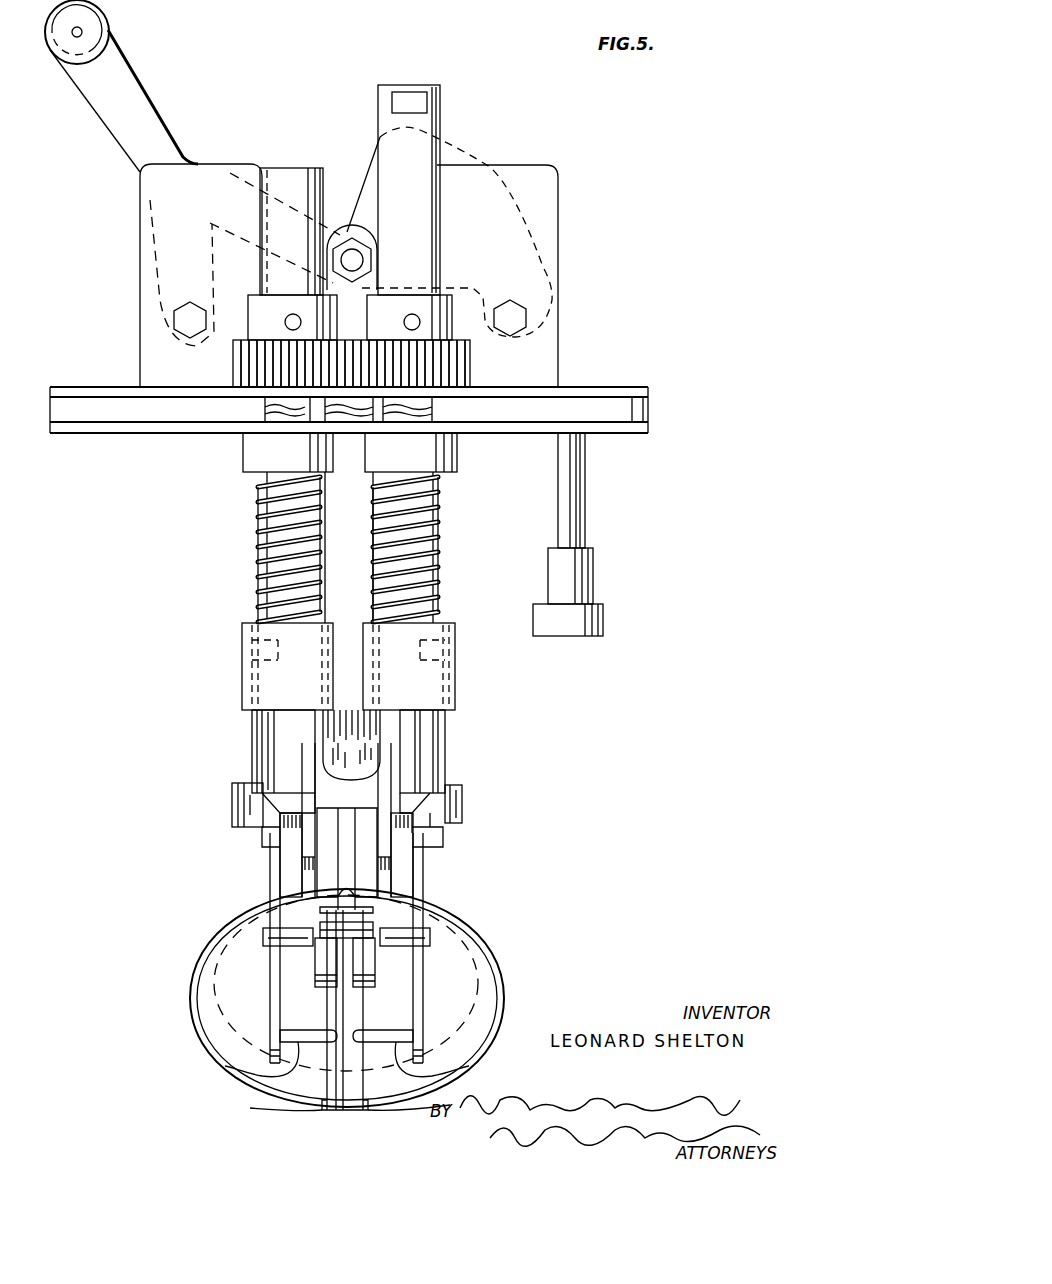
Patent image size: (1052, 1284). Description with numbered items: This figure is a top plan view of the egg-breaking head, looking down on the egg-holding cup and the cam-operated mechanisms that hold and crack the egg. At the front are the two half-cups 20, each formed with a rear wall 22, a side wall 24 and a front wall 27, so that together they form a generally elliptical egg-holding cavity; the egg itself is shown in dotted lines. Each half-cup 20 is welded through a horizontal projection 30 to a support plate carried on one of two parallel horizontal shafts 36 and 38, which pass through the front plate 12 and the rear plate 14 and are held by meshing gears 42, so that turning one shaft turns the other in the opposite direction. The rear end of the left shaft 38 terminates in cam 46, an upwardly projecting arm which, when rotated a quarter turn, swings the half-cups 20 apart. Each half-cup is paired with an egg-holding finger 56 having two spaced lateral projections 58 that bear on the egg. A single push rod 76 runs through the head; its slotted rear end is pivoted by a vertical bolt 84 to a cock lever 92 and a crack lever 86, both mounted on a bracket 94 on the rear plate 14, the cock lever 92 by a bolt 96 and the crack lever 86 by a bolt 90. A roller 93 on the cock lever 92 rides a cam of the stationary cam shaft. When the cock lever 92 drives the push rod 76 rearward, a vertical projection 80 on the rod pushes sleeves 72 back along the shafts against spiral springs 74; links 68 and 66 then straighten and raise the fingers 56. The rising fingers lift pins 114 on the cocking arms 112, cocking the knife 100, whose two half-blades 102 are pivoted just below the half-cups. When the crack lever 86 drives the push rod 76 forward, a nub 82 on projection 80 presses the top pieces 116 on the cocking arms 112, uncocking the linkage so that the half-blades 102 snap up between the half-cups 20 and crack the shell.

The roller 93 is at (100, 28).
The cock lever 92 is at (152, 120).
The bracket 94 is at (140, 272).
The bolt 96 is at (176, 322).
The bolt 90 is at (527, 317).
The crack lever 86 is at (473, 157).
The right horizontal shaft 36 is at (292, 166).
The left horizontal shaft 38 is at (397, 85).
The cam 46 is at (413, 95).
The vertical bolt 84 is at (364, 262).
The push rod 76 is at (349, 228).
The gears 42 is at (470, 365).
The rear plate 14 is at (112, 386).
The front plate 12 is at (622, 440).
The spiral springs 74 is at (260, 562).
The sleeves 72 is at (243, 664).
The link 68 is at (252, 748).
The vertical projection 80 is at (382, 737).
The nub 82 is at (378, 760).
The cocking arm 112 is at (446, 848).
The link 66 is at (435, 834).
The horizontal projection 30 is at (287, 862).
The rear wall 22 is at (298, 878).
The top pieces 116 is at (375, 908).
The pin 114 is at (380, 930).
The half-cup 20 is at (500, 950).
The side wall 24 is at (192, 974).
The lateral projections 58 is at (295, 950).
The egg-holding finger 56 is at (270, 985).
The knife 100 is at (345, 1108).
The half-blades 102 is at (328, 1108).
The front wall 27 is at (351, 1123).